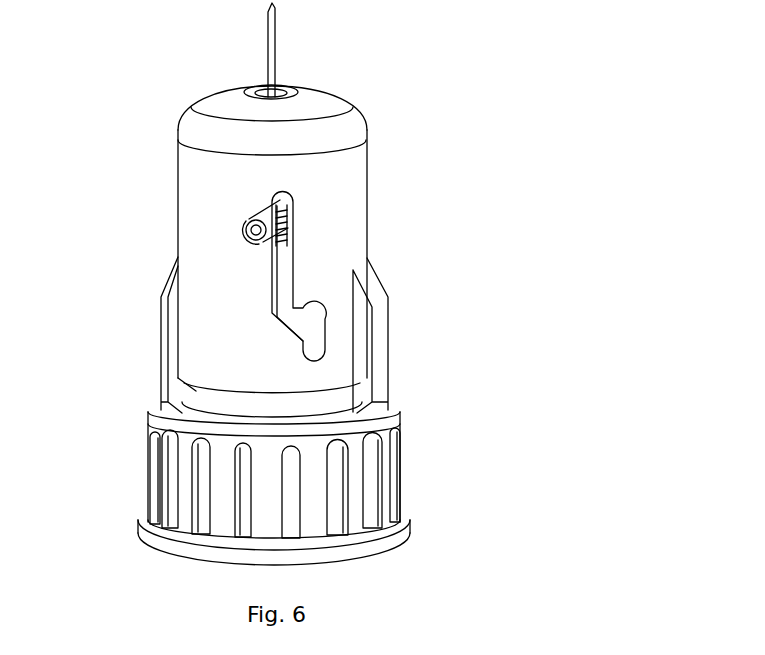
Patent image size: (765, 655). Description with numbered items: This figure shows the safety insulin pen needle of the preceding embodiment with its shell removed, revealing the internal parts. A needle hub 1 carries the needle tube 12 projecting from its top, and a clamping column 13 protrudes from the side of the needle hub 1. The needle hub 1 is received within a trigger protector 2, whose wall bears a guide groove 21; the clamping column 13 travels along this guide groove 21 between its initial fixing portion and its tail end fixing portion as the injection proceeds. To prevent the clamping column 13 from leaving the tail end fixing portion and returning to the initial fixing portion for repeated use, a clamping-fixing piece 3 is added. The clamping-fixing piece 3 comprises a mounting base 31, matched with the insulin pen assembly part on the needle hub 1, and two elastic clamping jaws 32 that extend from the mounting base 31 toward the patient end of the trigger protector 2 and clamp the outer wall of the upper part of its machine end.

The needle hub 1 is at (214, 393).
The trigger protector 2 is at (186, 218).
The clamping-fixing piece 3 is at (281, 488).
The needle tube 12 is at (276, 52).
The clamping column 13 is at (293, 212).
The guide groove 21 is at (283, 268).
The mounting base 31 is at (226, 488).
The clamping jaw 32 is at (380, 343).